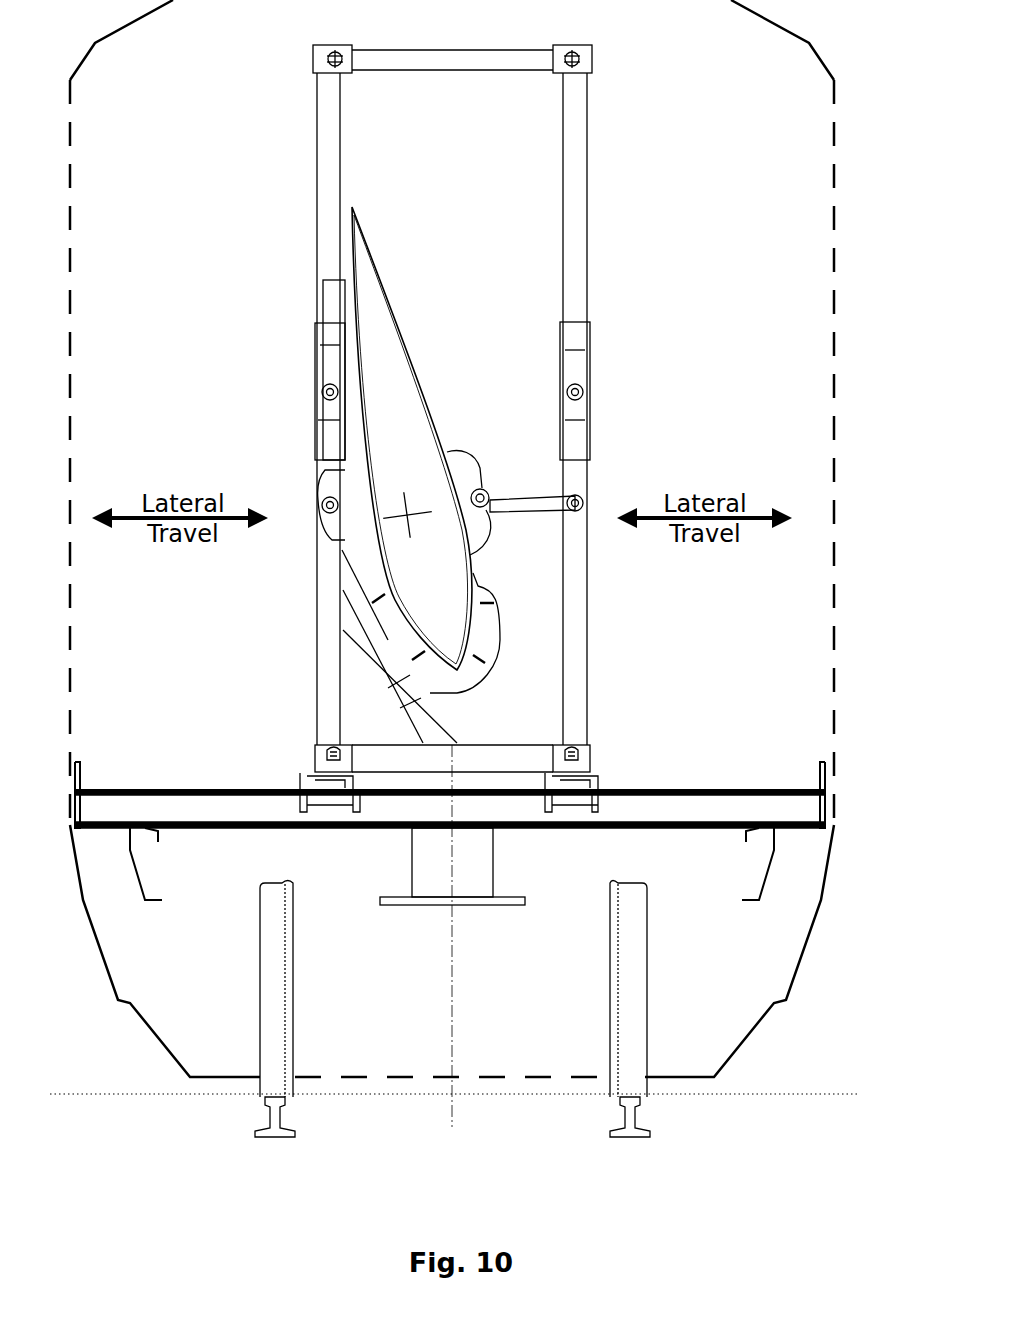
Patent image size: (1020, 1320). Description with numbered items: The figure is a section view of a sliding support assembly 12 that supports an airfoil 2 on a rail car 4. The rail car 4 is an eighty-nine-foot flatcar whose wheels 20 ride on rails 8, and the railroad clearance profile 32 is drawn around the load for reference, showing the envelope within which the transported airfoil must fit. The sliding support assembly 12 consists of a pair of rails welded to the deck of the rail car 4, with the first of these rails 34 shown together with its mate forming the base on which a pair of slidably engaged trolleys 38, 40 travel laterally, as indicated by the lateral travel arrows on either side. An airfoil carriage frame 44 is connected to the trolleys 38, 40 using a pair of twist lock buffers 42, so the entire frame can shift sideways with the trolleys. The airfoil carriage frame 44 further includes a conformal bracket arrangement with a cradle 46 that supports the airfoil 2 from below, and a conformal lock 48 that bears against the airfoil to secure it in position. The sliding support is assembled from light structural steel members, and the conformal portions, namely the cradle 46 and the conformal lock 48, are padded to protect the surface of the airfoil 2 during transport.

The airfoil 2 is at (380, 315).
The rail car 4 is at (777, 835).
The rails 8 is at (622, 1103).
The sliding support assembly 12 is at (255, 556).
The wheels 20 is at (647, 962).
The railroad clearance profile 32 is at (820, 55).
The rail 34 is at (793, 790).
The trolley 38 is at (605, 785).
The trolley 40 is at (297, 780).
The twist lock buffers 42 is at (320, 770).
The airfoil carriage frame 44 is at (317, 165).
The cradle 46 is at (478, 685).
The conformal lock 48 is at (478, 470).